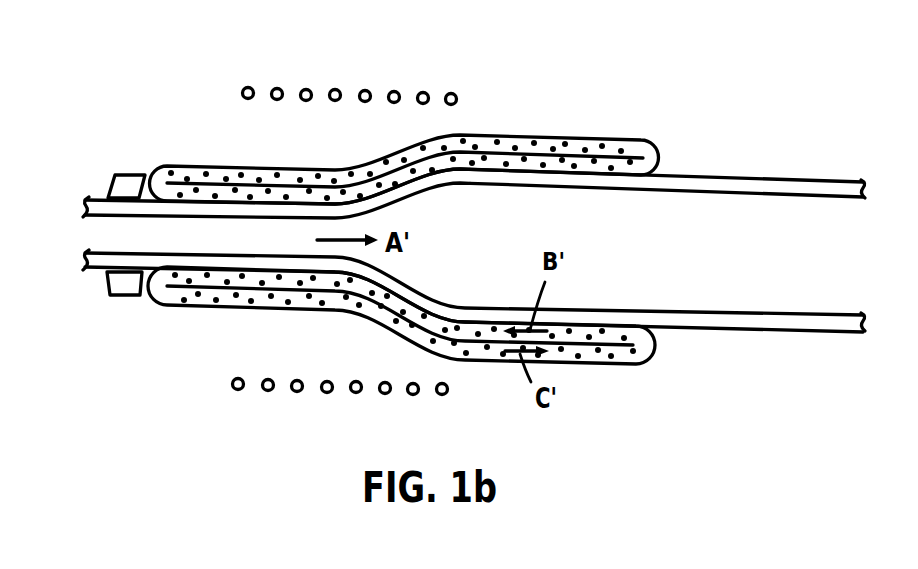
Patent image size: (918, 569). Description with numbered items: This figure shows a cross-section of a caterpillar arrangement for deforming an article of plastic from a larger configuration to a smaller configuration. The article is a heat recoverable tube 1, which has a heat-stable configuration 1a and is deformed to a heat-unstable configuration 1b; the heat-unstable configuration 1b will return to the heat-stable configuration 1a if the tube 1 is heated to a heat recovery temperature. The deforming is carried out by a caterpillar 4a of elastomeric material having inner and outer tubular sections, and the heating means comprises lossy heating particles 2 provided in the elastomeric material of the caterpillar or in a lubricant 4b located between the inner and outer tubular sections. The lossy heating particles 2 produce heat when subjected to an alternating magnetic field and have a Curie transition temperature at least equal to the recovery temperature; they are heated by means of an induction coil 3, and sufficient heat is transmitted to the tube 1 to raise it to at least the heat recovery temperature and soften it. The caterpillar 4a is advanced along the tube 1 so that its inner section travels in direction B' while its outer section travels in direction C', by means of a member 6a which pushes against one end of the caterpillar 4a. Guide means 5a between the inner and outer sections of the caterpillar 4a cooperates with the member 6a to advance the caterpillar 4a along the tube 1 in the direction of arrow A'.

The heat recoverable tube 1 is at (88, 272).
The heat-stable configuration 1a is at (90, 199).
The heat-unstable configuration 1b is at (778, 189).
The lossy heating particles 2 is at (182, 174).
The induction coil 3 is at (318, 78).
The caterpillar 4a is at (509, 126).
The lubricant 4b is at (578, 150).
The guide means 5a is at (160, 301).
The member 6a is at (113, 180).